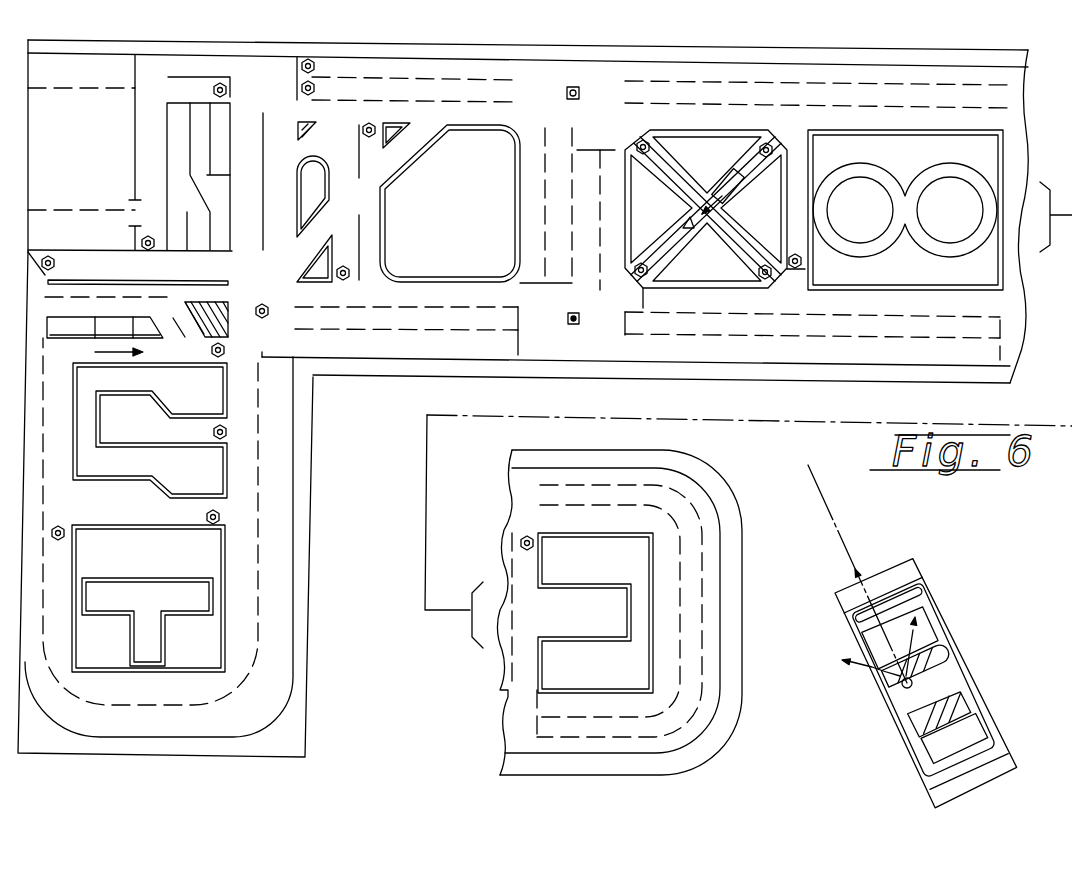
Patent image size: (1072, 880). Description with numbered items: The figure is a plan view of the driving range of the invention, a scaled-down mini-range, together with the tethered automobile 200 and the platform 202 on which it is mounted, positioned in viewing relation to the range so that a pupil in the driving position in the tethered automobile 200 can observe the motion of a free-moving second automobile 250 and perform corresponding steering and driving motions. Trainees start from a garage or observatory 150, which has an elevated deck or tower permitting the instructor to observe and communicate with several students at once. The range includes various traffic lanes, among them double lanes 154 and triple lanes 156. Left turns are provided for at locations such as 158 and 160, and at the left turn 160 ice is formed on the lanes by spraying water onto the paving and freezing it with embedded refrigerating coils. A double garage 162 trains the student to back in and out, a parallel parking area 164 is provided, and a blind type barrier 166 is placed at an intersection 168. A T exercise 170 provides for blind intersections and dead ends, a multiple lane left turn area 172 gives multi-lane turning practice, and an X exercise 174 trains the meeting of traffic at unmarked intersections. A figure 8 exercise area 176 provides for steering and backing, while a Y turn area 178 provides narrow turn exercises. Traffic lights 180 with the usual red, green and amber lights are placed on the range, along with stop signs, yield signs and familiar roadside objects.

The garage or observatory 150 is at (92, 157).
The double lanes 154 is at (245, 590).
The triple lanes 156 is at (780, 325).
The left turn 158 is at (247, 227).
The left turn with ice 160 is at (225, 130).
The double garage 162 is at (207, 397).
The parallel parking area 164 is at (160, 262).
The blind type barrier 166 is at (228, 325).
The intersection 168 is at (226, 354).
The T exercise 170 is at (172, 568).
The multiple lane left turn area 172 is at (372, 207).
The X exercise 174 is at (715, 219).
The figure 8 exercise area 176 is at (930, 286).
The Y turn area 178 is at (612, 573).
The traffic lights 180 is at (578, 86).
The tethered automobile 200 is at (948, 678).
The platform 202 is at (905, 573).
The second automobile 250 is at (732, 168).